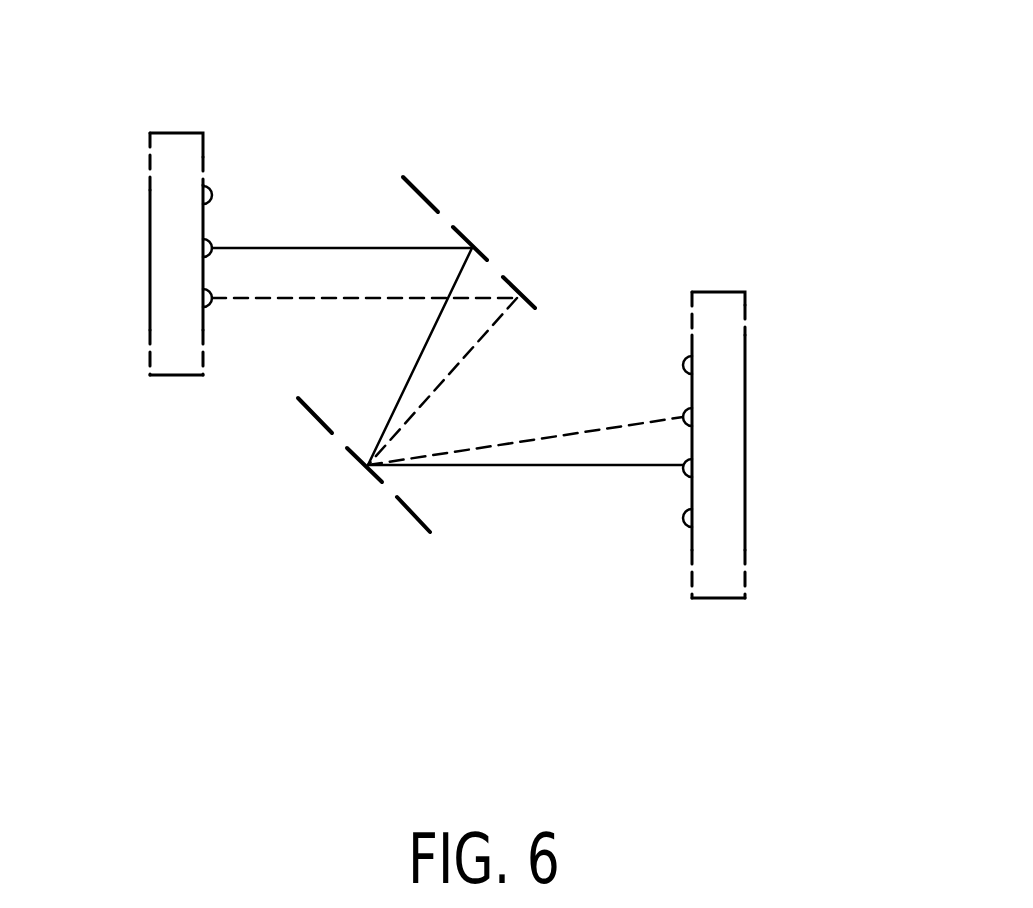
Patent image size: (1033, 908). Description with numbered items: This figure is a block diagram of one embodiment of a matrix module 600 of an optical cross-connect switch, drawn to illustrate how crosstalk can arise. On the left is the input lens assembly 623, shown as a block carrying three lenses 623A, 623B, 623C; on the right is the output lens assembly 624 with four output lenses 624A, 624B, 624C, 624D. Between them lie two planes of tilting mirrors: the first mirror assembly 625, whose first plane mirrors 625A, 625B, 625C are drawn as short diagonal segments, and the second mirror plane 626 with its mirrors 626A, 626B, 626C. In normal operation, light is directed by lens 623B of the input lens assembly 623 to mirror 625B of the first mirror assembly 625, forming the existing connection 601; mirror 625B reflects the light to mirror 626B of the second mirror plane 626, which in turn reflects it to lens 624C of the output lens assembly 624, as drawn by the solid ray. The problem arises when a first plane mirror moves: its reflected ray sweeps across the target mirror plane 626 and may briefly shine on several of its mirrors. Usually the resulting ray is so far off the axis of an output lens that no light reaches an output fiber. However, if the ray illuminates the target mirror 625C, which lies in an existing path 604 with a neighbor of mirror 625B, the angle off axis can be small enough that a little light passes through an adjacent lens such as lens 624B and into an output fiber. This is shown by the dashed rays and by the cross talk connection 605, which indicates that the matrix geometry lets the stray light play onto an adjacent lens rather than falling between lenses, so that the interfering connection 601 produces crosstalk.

The optical switching system 600 is at (565, 37).
The existing connection 601 is at (329, 212).
The existing path 604 is at (300, 315).
The cross talk connection 605 is at (654, 440).
The input lens assembly 623 is at (168, 217).
The lens of input lens assembly 623A is at (216, 192).
The lens of input lens assembly 623B is at (210, 240).
The lens of input lens assembly 623C is at (213, 292).
The output lens assembly 624 is at (728, 550).
The output lens 624A is at (683, 355).
The output lens 624B is at (673, 415).
The output lens 624C is at (677, 477).
The output lens 624D is at (680, 527).
The first mirror assembly 625 is at (543, 193).
The first plane mirror 625A is at (432, 188).
The first plane mirror 625B is at (490, 257).
The target mirror 625C is at (528, 302).
The second mirror plane 626 is at (288, 386).
The mirror of second mirror plane 626A is at (317, 418).
The mirror of second mirror plane 626B is at (352, 453).
The mirror of second mirror plane 626C is at (410, 513).